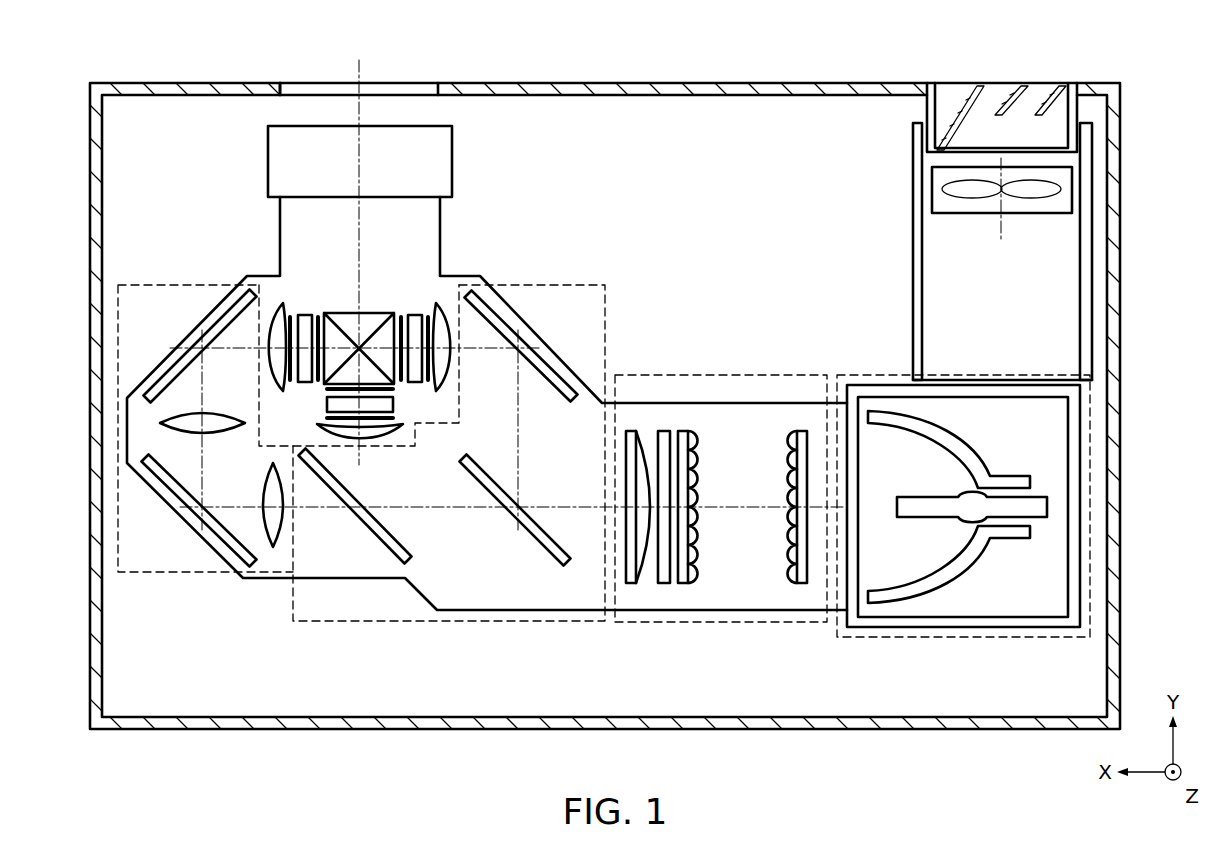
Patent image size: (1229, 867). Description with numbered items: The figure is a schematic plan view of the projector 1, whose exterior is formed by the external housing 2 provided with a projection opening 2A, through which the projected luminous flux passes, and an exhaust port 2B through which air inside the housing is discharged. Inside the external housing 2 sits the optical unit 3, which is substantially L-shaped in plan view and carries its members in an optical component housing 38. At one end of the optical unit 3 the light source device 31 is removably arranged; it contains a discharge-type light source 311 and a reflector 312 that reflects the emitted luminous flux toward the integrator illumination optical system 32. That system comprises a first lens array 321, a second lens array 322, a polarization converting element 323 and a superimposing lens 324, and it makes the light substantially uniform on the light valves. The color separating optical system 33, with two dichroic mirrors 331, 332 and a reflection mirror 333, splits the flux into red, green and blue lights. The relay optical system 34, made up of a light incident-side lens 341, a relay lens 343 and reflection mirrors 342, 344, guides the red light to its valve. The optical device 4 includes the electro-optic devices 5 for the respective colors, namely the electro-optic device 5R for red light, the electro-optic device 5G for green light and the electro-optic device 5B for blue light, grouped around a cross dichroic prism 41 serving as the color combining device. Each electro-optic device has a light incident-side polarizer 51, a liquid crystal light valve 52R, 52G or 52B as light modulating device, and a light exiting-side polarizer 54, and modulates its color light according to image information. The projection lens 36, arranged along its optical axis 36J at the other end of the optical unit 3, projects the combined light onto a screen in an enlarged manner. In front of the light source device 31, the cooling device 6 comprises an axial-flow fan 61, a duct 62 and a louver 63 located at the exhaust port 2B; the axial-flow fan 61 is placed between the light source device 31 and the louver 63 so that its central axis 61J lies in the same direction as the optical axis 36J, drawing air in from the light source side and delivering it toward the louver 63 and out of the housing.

The projector 1 is at (740, 62).
The external housing 2 is at (90, 255).
The projection opening 2A is at (281, 82).
The exhaust port 2B is at (931, 82).
The optical unit 3 is at (586, 164).
The optical device 4 is at (348, 300).
The electro-optic devices 5 is at (361, 350).
The electro-optic device for R-light 5R is at (245, 308).
The electro-optic device for B-light 5B is at (473, 296).
The electro-optic device for G-light 5G is at (422, 444).
The cooling device 6 is at (1013, 251).
The light source device 31 is at (890, 638).
The integrator illumination optical system 32 is at (666, 622).
The color separating optical system 33 is at (487, 622).
The relay optical system 34 is at (125, 393).
The projection lens 36 is at (452, 190).
The optical axis 36J is at (360, 147).
The optical component housing 38 is at (367, 580).
The cross dichroic prism 41 is at (340, 313).
The light incident-side polarizer 51 is at (300, 314).
The liquid crystal light valve for R-light 52R is at (297, 314).
The liquid crystal light valve for B-light 52B is at (434, 313).
The liquid crystal light valve for G-light 52G is at (405, 405).
The light exiting-side polarizer 54 is at (328, 390).
The axial-flow fan 61 is at (1092, 190).
The central axis 61J is at (1001, 240).
The duct 62 is at (1092, 298).
The louver 63 is at (1010, 82).
The light source 311 is at (937, 508).
The reflector 312 is at (972, 552).
The first lens array 321 is at (800, 432).
The second lens array 322 is at (681, 432).
The polarization converting element 323 is at (663, 432).
The superimposing lens 324 is at (637, 432).
The dichroic mirror 331 is at (543, 546).
The dichroic mirror 332 is at (388, 545).
The reflection mirror 333 is at (540, 360).
The light incident-side lens 341 is at (266, 568).
The reflection mirror 342 is at (165, 483).
The relay lens 343 is at (212, 427).
The reflection mirror 344 is at (178, 360).